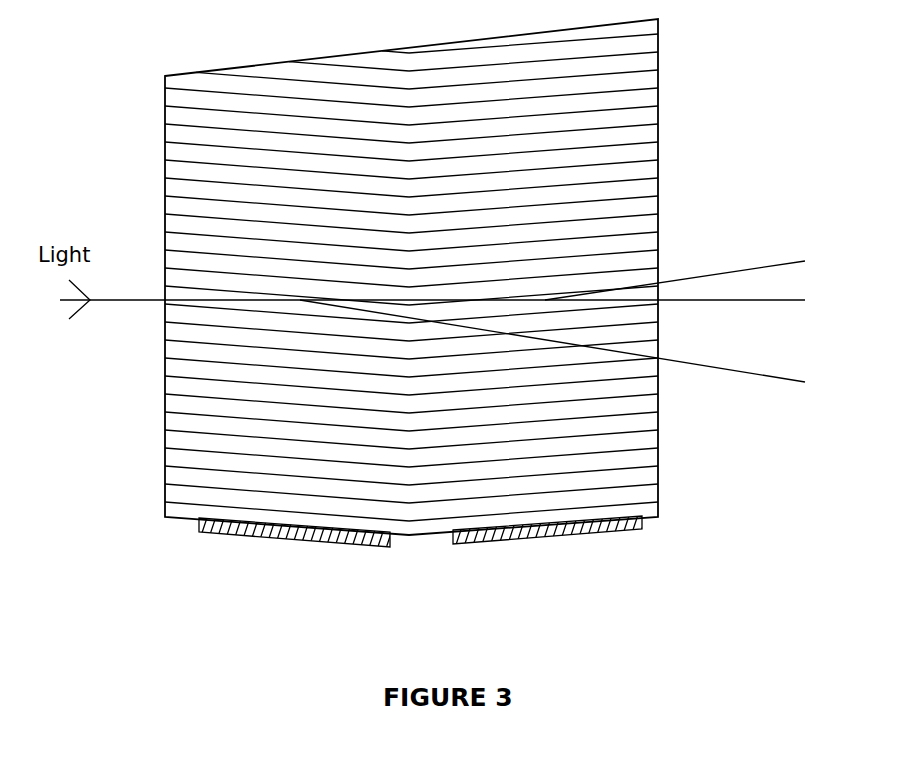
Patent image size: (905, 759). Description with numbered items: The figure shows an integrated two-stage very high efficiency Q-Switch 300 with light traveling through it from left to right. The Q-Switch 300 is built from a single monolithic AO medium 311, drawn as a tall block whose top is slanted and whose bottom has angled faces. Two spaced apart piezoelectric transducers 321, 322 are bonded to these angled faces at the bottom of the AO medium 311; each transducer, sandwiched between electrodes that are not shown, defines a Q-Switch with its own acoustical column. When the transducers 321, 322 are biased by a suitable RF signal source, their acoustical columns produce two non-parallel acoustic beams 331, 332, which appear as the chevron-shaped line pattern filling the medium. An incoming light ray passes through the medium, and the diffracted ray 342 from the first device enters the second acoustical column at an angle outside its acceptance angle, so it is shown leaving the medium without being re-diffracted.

The integrated two-stage very high efficiency (VHE) Q-Switch 300 is at (789, 547).
The monolithic AO medium 311 is at (657, 132).
The piezoelectric transducer 321 is at (267, 540).
The piezoelectric transducer 322 is at (562, 533).
The acoustic beam 331 is at (205, 92).
The acoustic beam 332 is at (602, 74).
The diffracted ray 342 is at (385, 313).